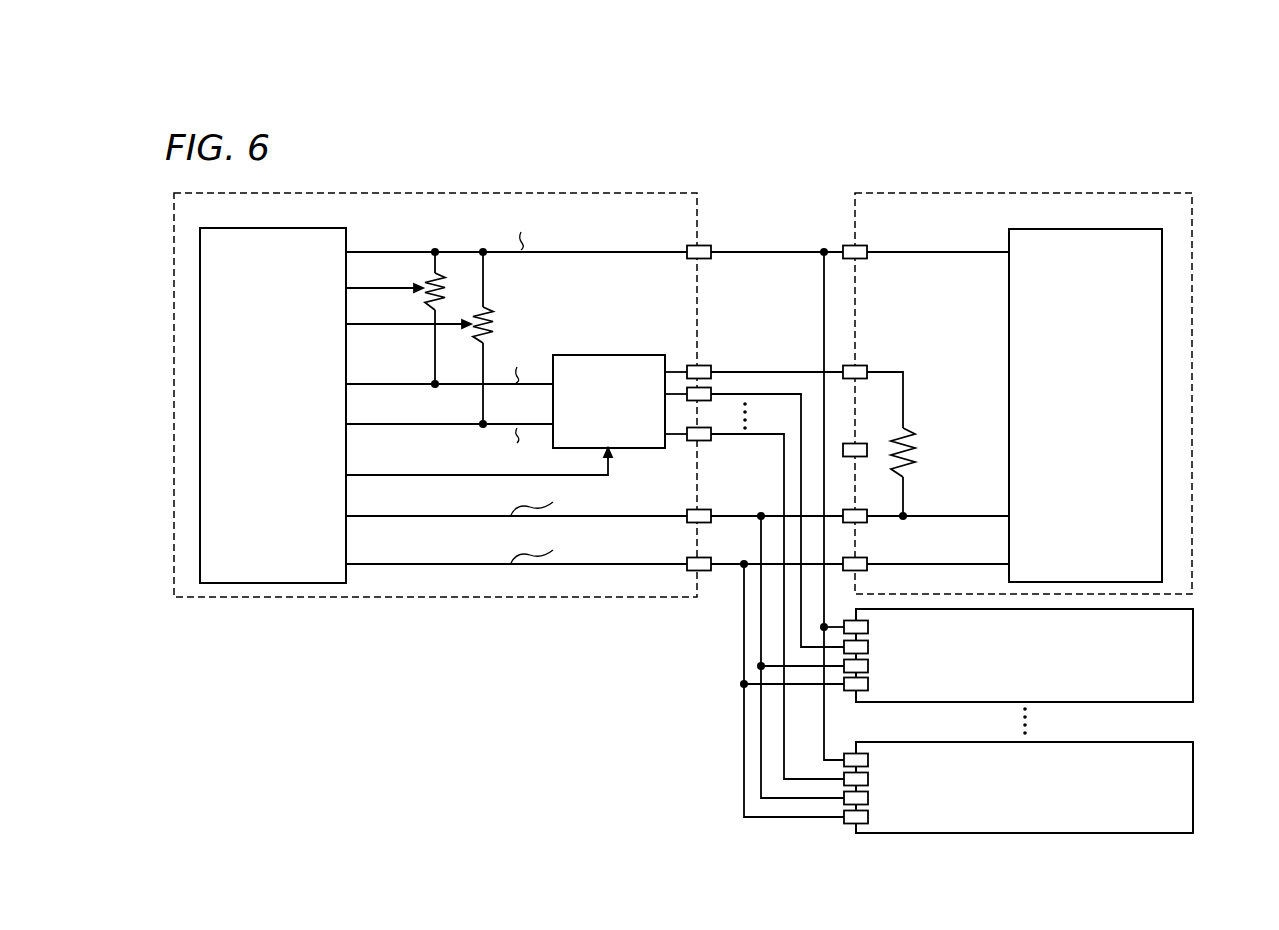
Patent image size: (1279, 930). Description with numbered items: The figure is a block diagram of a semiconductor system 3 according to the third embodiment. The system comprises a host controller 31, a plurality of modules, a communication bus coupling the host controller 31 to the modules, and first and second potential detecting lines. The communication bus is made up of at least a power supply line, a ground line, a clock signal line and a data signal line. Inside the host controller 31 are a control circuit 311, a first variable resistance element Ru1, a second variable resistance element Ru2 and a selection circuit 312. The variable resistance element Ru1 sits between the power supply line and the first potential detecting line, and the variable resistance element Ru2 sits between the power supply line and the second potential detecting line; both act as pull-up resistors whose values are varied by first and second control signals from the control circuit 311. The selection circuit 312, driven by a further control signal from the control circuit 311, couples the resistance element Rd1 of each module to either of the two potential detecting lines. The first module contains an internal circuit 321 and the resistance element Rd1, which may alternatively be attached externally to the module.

The semiconductor system 3 is at (785, 183).
The host controller 31 is at (560, 193).
The control circuit 311 is at (262, 229).
The selection circuit 312 is at (630, 355).
The first variable resistance element Ru1 is at (445, 284).
The second variable resistance element Ru2 is at (493, 318).
The internal circuit 321 is at (1085, 229).
The resistance element Rd1 is at (915, 460).